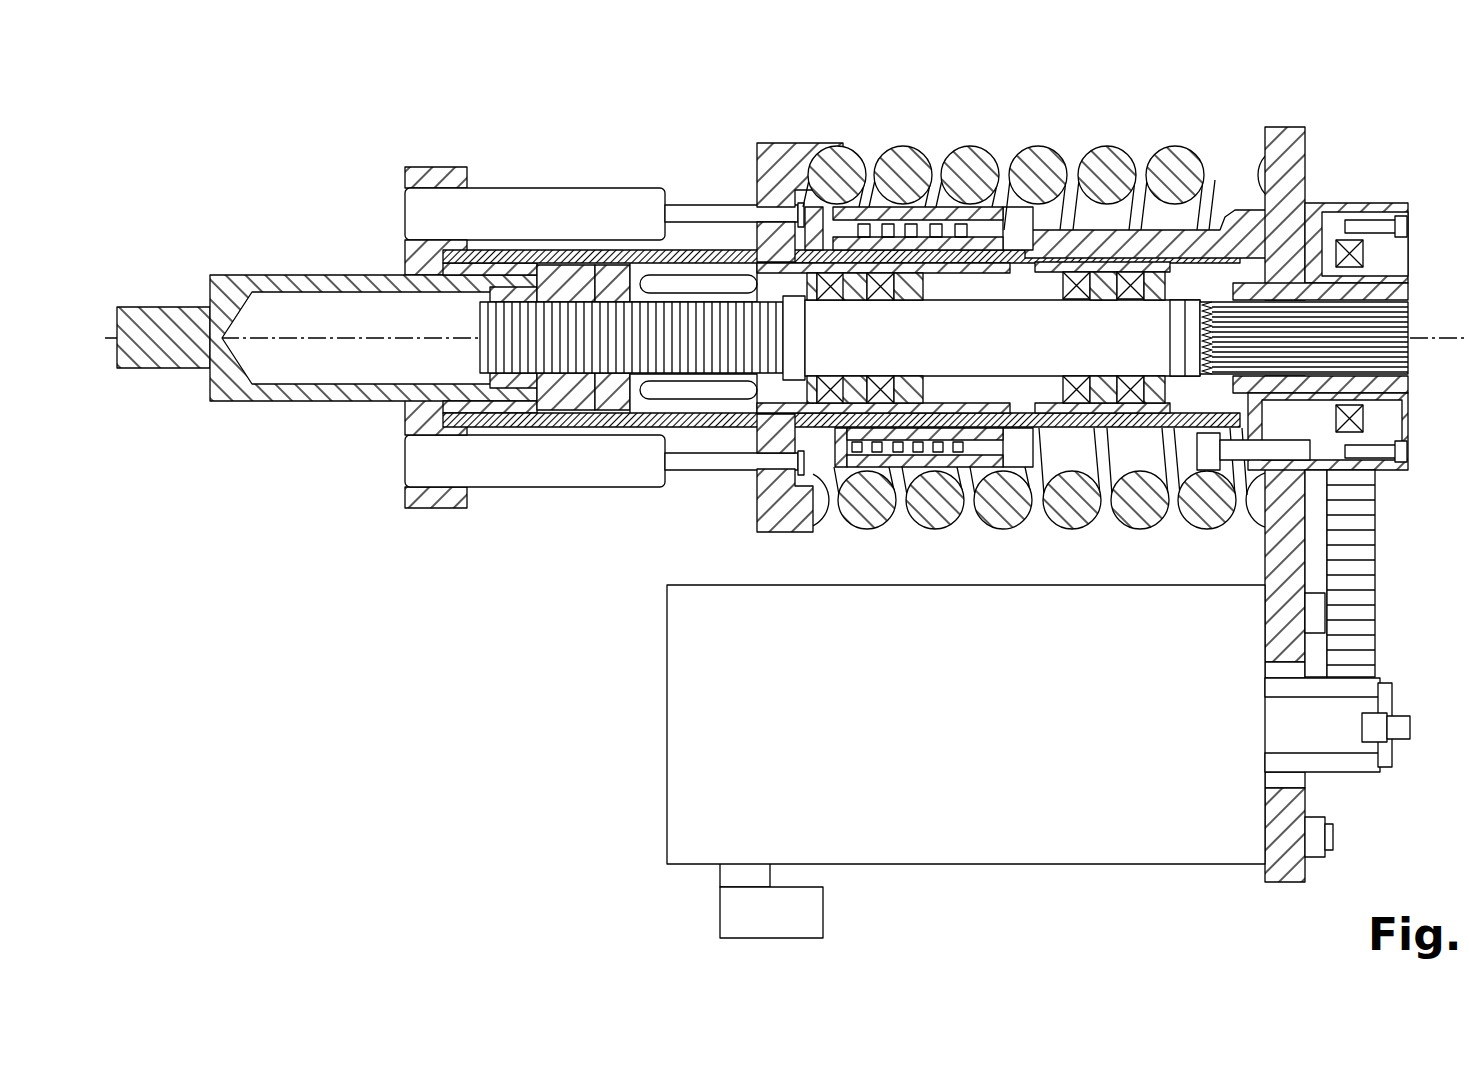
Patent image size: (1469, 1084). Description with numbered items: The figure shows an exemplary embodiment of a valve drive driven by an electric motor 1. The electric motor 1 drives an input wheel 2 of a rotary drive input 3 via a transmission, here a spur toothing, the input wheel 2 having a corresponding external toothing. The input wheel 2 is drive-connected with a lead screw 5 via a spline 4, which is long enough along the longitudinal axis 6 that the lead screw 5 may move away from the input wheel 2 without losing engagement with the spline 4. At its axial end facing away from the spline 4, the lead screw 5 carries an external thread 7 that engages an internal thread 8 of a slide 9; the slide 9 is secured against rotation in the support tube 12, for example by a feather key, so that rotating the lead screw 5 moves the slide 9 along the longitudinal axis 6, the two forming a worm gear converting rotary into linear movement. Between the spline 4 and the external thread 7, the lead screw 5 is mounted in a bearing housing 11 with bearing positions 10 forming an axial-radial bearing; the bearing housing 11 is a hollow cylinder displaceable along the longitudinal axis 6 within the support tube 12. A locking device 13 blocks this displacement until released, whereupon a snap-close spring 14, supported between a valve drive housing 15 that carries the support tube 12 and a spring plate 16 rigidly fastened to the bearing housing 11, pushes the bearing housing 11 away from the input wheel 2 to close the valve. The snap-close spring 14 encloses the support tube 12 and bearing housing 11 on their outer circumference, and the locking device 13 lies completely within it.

The electric motor 1 is at (1055, 852).
The input wheel 2 is at (1392, 460).
The rotary drive input 3 is at (1363, 184).
The spline 4 is at (1410, 347).
The lead screw 5 is at (1036, 310).
The longitudinal axis 6 is at (412, 213).
The external thread 7 is at (693, 290).
The internal thread 8 is at (600, 290).
The slide 9 is at (570, 280).
The bearing positions 10 is at (1028, 287).
The bearing housing 11 is at (1022, 433).
The support tube 12 is at (1085, 433).
The locking device 13 is at (1028, 286).
The snap-close spring 14 is at (965, 152).
The valve drive housing 15 is at (1283, 875).
The spring plate 16 is at (765, 178).